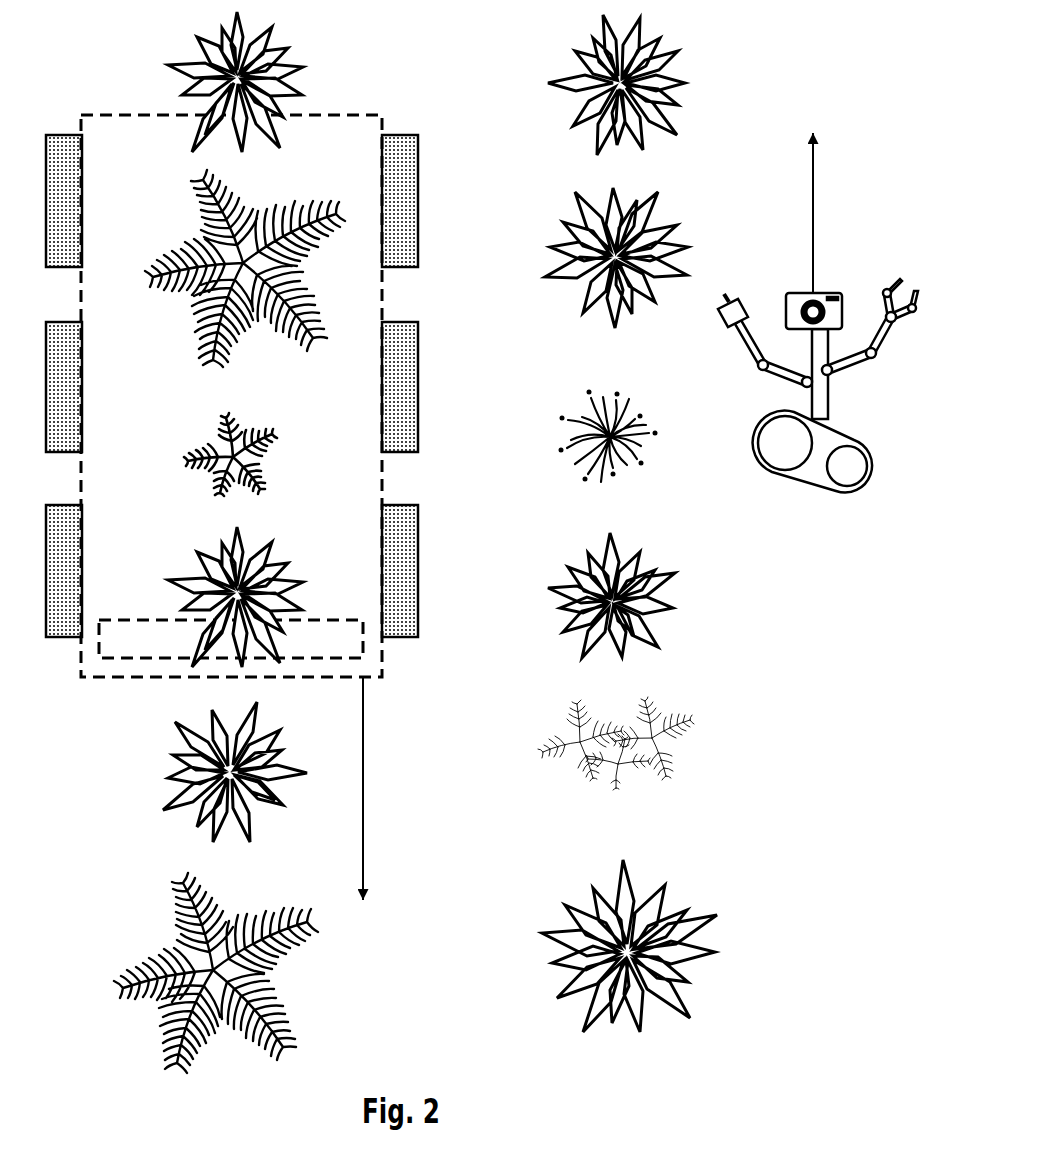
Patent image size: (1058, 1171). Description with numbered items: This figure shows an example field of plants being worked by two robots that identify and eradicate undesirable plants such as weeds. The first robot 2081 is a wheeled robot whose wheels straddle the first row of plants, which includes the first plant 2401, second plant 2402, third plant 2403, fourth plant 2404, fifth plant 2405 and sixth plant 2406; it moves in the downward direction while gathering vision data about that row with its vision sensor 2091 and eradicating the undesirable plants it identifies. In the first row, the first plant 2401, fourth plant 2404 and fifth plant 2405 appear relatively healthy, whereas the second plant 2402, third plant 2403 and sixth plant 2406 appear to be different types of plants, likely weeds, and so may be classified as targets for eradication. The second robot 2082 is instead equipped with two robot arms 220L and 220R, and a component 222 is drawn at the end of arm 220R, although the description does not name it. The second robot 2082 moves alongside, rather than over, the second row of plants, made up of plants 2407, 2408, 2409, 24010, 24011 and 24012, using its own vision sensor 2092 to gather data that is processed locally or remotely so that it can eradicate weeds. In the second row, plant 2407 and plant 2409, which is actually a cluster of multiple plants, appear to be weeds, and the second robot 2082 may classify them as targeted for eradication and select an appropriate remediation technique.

The first robot 2081 is at (383, 294).
The second robot 2082 is at (804, 313).
The vision sensor 2091 is at (323, 620).
The vision sensor 2092 is at (786, 300).
The first plant 2401 is at (172, 47).
The second plant 2402 is at (177, 195).
The third plant 2403 is at (177, 373).
The fourth plant 2404 is at (177, 556).
The fifth plant 2405 is at (137, 752).
The sixth plant 2406 is at (137, 936).
The plant 2407 is at (513, 74).
The plant 2408 is at (517, 224).
The plant 2409 is at (517, 404).
The plant 24010 is at (517, 587).
The plant 24011 is at (517, 733).
The plant 24012 is at (512, 915).
The end effector 222 is at (718, 320).
The robot arm 220R is at (757, 364).
The robot arm 220L is at (888, 337).